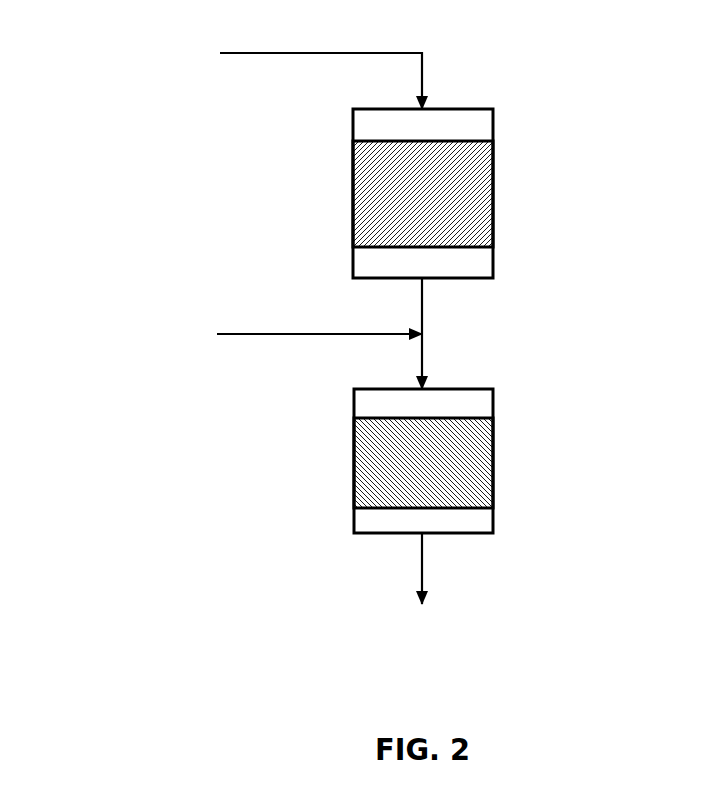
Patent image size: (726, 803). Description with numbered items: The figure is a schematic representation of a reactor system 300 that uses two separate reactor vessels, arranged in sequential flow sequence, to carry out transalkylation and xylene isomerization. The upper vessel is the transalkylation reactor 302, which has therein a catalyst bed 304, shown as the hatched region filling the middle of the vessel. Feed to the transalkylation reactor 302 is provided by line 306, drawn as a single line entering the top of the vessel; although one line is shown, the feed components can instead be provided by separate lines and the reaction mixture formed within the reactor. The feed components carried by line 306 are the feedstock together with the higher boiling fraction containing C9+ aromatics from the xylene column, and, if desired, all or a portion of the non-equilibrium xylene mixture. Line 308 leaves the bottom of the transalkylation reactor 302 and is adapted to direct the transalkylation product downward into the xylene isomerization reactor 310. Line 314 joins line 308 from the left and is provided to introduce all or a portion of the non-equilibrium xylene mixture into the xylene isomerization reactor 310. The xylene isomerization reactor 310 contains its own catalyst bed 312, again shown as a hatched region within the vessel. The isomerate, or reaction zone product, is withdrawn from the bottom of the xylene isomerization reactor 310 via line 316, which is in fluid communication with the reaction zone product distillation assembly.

The reactor system 300 is at (248, 568).
The transalkylation reactor 302 is at (352, 175).
The catalyst bed 304 is at (472, 197).
The line 306 is at (327, 53).
The line 308 is at (422, 293).
The xylene isomerization reactor 310 is at (493, 471).
The catalyst bed 312 is at (373, 440).
The line 314 is at (308, 333).
The line 316 is at (422, 545).